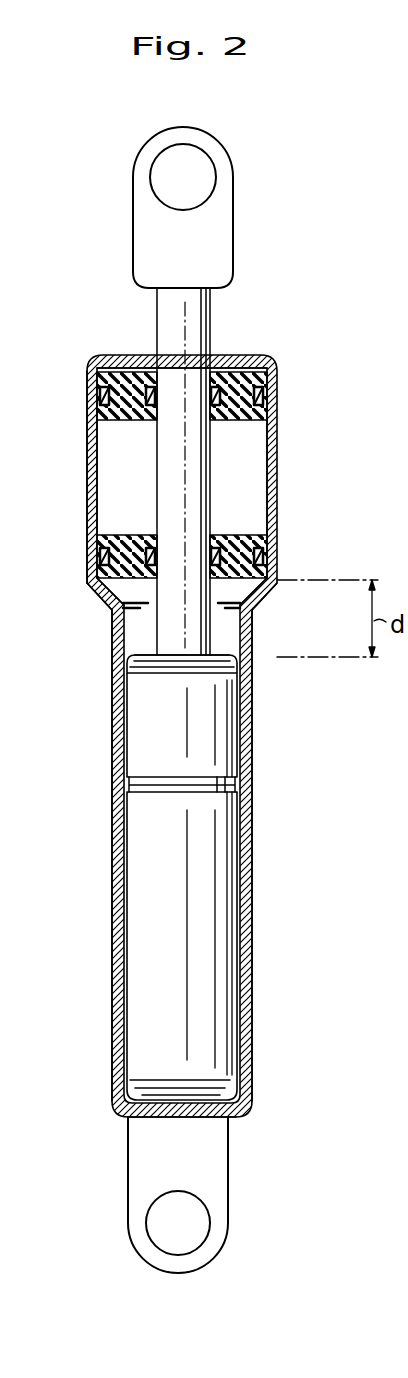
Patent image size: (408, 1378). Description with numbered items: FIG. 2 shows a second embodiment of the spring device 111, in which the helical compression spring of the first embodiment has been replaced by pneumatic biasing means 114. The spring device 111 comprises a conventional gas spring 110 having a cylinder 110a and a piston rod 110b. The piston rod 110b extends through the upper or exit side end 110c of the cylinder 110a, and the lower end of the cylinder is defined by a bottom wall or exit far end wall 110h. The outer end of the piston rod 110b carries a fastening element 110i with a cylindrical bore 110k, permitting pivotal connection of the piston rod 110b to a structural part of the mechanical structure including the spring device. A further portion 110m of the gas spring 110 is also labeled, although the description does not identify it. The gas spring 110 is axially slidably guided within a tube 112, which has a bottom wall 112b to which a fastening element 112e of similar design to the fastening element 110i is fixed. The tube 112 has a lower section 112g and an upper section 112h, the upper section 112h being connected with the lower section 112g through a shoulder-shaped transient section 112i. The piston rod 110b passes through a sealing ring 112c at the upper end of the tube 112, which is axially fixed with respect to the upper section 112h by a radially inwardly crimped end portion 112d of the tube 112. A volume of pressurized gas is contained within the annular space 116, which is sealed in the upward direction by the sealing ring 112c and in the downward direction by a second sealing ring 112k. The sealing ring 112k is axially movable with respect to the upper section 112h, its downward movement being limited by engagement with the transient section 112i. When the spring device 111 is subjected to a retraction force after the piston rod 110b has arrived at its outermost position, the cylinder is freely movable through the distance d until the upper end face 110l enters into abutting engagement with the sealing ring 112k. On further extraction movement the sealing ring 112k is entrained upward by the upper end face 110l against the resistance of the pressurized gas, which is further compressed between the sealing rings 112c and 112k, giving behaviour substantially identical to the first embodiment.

The gas spring 110 is at (222, 883).
The cylinder 110a is at (222, 707).
The piston rod 110b is at (163, 631).
The upper or exit side end 110c is at (132, 672).
The bottom wall or exit far end wall 110h is at (200, 1115).
The fastening element 110i is at (210, 245).
The cylindrical bore 110k is at (197, 175).
The upper end face 110l is at (213, 653).
The piston neck / groove 110m is at (150, 785).
The spring device 111 is at (108, 737).
The tube 112 is at (245, 805).
The bottom wall 112b is at (157, 1120).
The sealing ring 112c is at (262, 373).
The radially inwardly crimped end portion 112d is at (232, 360).
The fastening element 112e is at (212, 1188).
The lower section 112g is at (252, 1010).
The upper section 112h is at (88, 437).
The shoulder-shaped transient section 112i is at (100, 596).
The sealing ring 112k is at (247, 547).
The pneumatic biasing means 114 is at (117, 502).
The annular space 116 is at (250, 458).